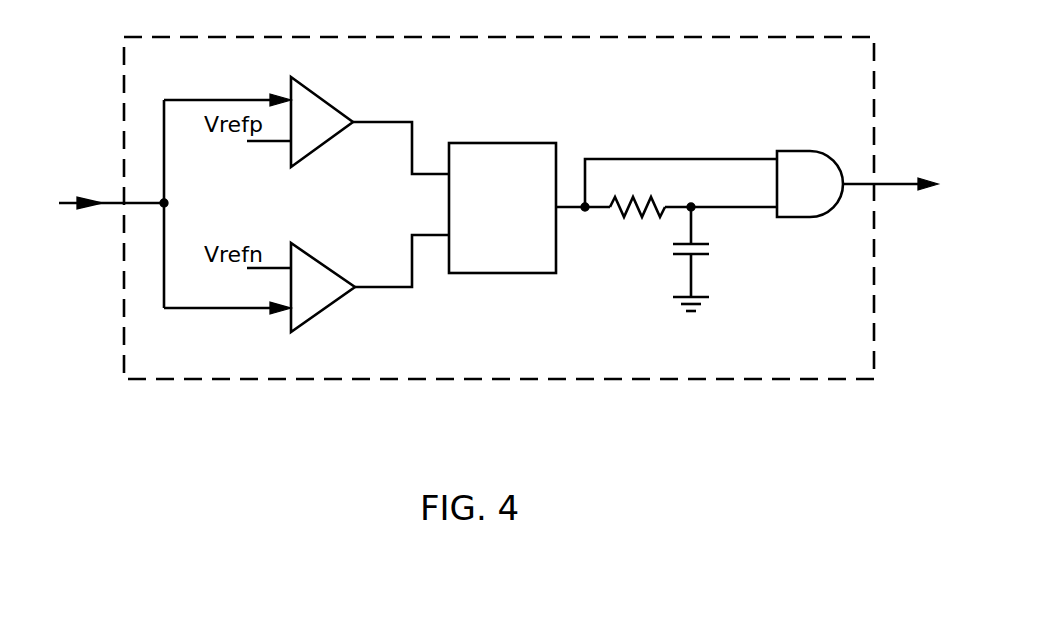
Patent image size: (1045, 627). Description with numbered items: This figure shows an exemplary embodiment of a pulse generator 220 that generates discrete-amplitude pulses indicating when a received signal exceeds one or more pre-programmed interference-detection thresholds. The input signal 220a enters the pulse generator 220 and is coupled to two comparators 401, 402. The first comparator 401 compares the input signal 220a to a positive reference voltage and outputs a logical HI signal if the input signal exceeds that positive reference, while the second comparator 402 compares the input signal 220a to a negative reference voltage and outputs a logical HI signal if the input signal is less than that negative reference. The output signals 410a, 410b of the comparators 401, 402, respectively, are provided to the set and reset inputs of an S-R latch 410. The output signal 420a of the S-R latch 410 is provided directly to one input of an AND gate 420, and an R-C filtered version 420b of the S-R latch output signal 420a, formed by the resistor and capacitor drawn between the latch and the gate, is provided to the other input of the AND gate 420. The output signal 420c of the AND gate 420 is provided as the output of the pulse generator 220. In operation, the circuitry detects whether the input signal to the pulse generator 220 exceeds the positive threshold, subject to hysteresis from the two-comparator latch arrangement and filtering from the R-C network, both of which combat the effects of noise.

The pulse generator 220 is at (528, 37).
The input signal 220a is at (103, 201).
The comparator 401 is at (316, 90).
The comparator 402 is at (316, 256).
The S-R latch 410 is at (507, 143).
The output signal of comparator 401 410a is at (400, 121).
The output signal of comparator 402 410b is at (398, 288).
The AND gate 420 is at (800, 151).
The output signal of S-R latch 420a is at (730, 158).
The R-C filtered version of the S-R latch output signal 420b is at (730, 206).
The output signal of the AND gate 420c is at (908, 186).